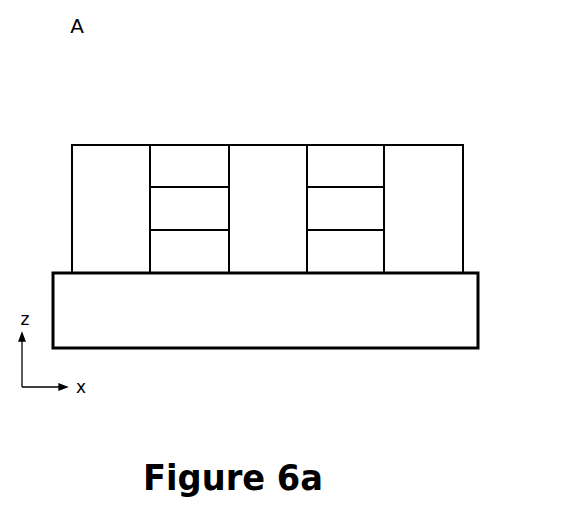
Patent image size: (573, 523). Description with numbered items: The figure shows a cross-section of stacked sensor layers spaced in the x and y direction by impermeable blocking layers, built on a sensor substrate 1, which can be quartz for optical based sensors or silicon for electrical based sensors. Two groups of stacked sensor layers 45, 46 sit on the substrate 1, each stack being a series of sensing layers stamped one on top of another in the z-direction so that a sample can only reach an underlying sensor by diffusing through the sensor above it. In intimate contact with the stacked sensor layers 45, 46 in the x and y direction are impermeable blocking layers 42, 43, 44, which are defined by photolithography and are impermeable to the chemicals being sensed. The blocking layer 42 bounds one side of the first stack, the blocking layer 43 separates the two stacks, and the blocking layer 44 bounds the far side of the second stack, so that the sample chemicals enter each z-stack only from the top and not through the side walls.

The sensor substrate 1 is at (478, 328).
The impermeable blocking layer 42 is at (111, 209).
The impermeable blocking layer 43 is at (268, 209).
The impermeable blocking layer 44 is at (423, 209).
The stacked sensor layers 45 is at (187, 145).
The stacked sensor layers 46 is at (351, 145).